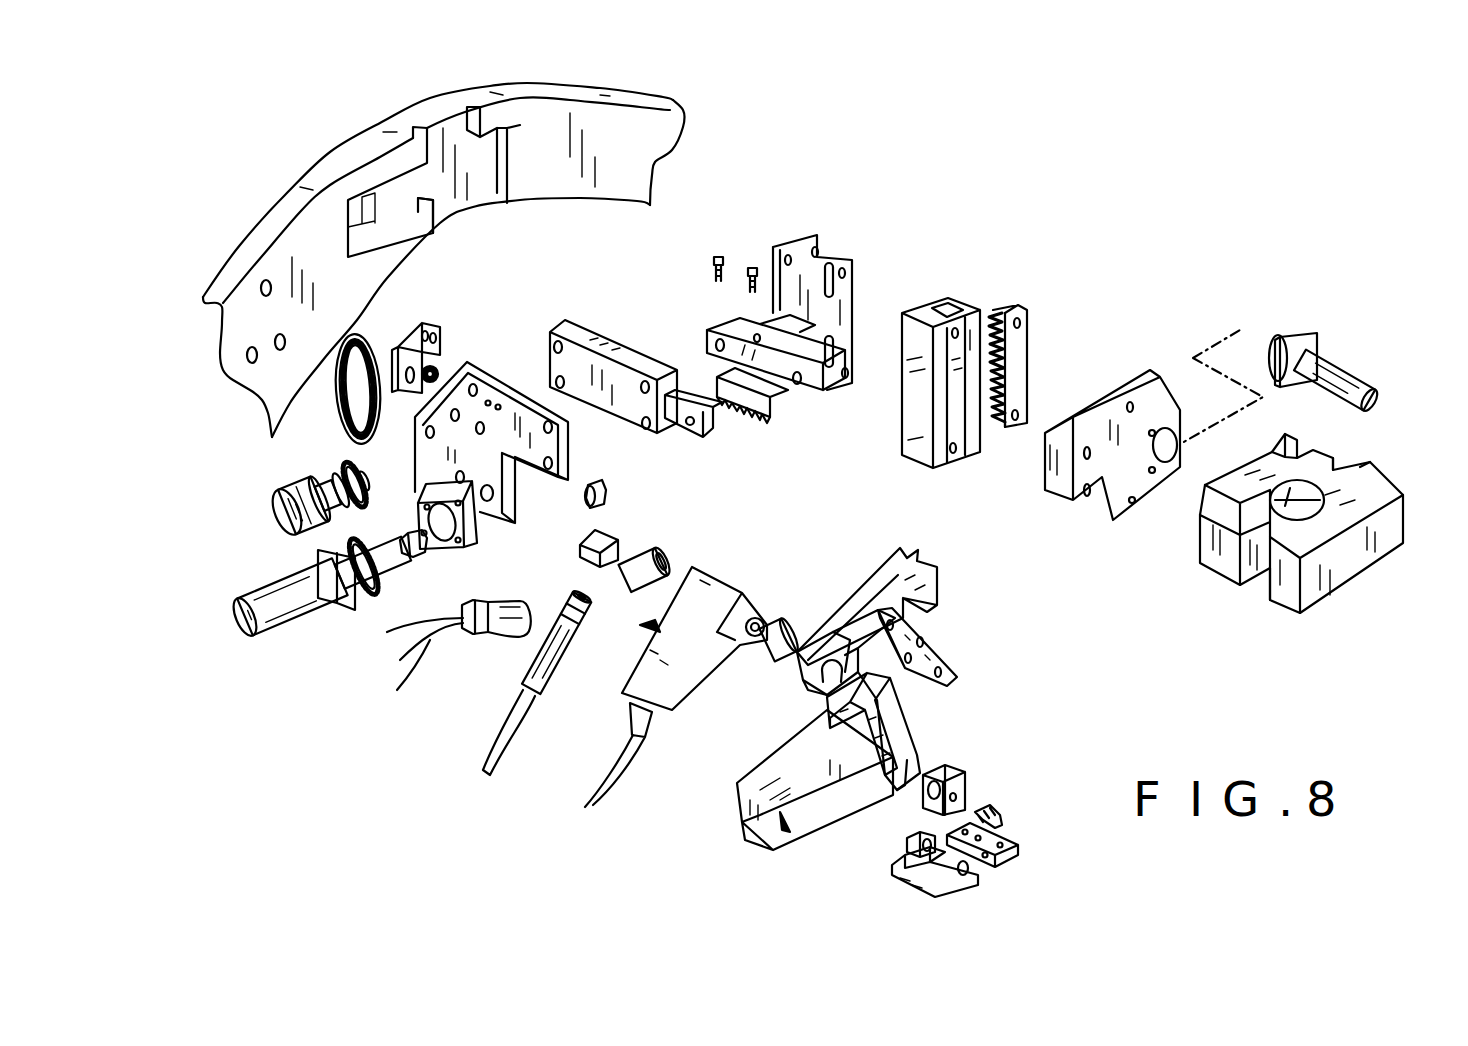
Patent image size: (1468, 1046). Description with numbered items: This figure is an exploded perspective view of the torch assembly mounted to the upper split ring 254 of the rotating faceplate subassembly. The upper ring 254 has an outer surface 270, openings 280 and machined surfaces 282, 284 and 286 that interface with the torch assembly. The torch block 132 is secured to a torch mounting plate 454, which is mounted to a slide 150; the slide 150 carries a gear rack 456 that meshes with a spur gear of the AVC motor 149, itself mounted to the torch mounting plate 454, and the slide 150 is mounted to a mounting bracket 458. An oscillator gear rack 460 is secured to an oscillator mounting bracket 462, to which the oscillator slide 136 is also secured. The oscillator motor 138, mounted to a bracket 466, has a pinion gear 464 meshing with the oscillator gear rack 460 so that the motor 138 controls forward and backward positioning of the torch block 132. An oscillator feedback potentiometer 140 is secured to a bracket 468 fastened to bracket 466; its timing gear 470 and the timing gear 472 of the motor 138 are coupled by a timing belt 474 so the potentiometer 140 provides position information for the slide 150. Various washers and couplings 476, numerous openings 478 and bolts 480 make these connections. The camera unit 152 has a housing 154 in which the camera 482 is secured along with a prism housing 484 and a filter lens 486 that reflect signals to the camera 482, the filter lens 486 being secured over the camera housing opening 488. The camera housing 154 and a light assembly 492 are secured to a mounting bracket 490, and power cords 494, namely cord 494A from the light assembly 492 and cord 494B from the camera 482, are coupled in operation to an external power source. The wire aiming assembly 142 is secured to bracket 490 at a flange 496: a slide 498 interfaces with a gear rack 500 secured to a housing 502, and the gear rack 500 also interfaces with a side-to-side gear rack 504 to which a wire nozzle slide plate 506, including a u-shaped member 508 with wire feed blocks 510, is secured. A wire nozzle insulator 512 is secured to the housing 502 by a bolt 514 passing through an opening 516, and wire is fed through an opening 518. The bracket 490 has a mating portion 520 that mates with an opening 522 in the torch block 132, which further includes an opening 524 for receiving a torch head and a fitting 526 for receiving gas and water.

The torch block 132 is at (1373, 507).
The oscillator slide 136 is at (623, 352).
The oscillator motor 138 is at (270, 618).
The oscillator feedback potentiometer 140 is at (312, 484).
The wire aiming assembly 142 is at (785, 830).
The AVC motor 149 is at (1350, 360).
The slide 150 is at (922, 305).
The camera unit 152 is at (645, 627).
The camera housing 154 is at (710, 660).
The upper split ring 254 is at (622, 172).
The outer surface 270 is at (425, 110).
The openings 280 is at (277, 334).
The machined surface 282 is at (352, 208).
The machined surface 284 is at (395, 198).
The machined surface 286 is at (463, 177).
The torch mounting plate 454 is at (1147, 398).
The gear rack 456 is at (1018, 365).
The mounting bracket 458 is at (850, 307).
The oscillator gear rack 460 is at (736, 398).
The oscillator mounting bracket 462 is at (773, 325).
The pinion gear 464 is at (418, 557).
The bracket 466 is at (512, 420).
The bracket 468 is at (428, 350).
The timing gear 470 is at (367, 503).
The timing gear 472 is at (377, 600).
The timing belt 474 is at (337, 385).
The washers and couplings 476 is at (436, 368).
The openings 478 is at (432, 322).
The bolts 480 is at (752, 267).
The camera 482 is at (550, 655).
The prism housing 484 is at (612, 532).
The filter lens 486 is at (655, 550).
The camera housing opening 488 is at (754, 615).
The mounting bracket 490 is at (900, 588).
The light assembly 492 is at (503, 632).
The power cords 494 is at (593, 803).
The power cord 494A is at (416, 668).
The power cord 494B is at (500, 760).
The flange 496 is at (948, 660).
The slide 498 is at (905, 716).
The gear rack 500 is at (905, 748).
The housing 502 is at (827, 812).
The side-to-side gear rack 504 is at (900, 798).
The wire nozzle slide plate 506 is at (1003, 835).
The u-shaped member 508 is at (922, 892).
The wire feed blocks 510 is at (965, 878).
The wire nozzle insulator 512 is at (958, 775).
The bolt 514 is at (1003, 812).
The opening 516 is at (955, 790).
The opening 518 is at (932, 770).
The mating portion 520 is at (922, 562).
The opening 522 is at (1352, 478).
The opening 524 is at (1305, 492).
The fitting 526 is at (1290, 450).